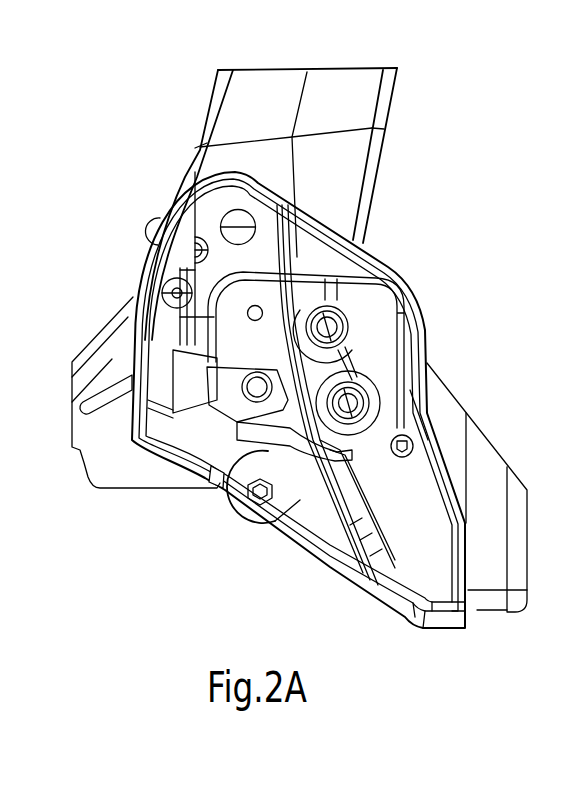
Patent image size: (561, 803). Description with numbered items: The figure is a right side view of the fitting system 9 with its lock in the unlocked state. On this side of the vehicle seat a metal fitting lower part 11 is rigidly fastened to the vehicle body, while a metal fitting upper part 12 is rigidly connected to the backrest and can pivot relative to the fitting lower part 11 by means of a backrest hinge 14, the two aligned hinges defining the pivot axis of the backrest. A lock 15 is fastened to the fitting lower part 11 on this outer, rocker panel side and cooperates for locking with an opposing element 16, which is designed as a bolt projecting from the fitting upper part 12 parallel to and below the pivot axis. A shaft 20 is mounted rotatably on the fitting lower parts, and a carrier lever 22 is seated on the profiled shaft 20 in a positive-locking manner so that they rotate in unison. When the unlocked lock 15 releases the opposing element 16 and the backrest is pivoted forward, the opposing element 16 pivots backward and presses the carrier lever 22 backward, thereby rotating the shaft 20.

The fitting system 9 is at (455, 145).
The fitting lower part 11 is at (343, 267).
The fitting upper part 12 is at (247, 110).
The backrest hinge 14 is at (240, 223).
The lock 15 is at (357, 520).
The opposing element 16 is at (255, 390).
The shaft 20 is at (260, 500).
The carrier lever 22 is at (228, 427).